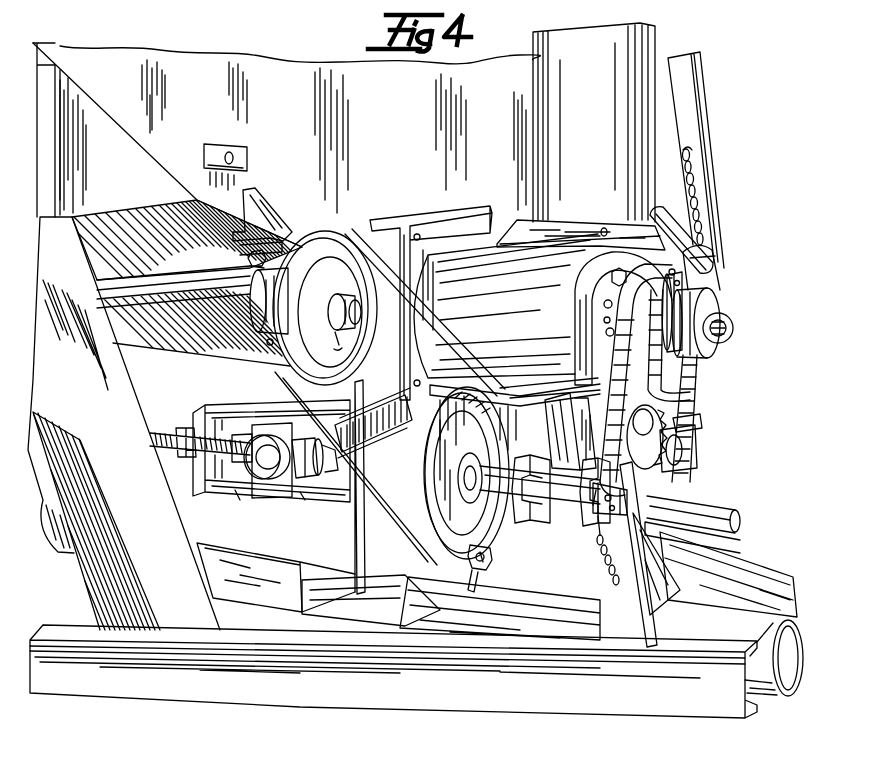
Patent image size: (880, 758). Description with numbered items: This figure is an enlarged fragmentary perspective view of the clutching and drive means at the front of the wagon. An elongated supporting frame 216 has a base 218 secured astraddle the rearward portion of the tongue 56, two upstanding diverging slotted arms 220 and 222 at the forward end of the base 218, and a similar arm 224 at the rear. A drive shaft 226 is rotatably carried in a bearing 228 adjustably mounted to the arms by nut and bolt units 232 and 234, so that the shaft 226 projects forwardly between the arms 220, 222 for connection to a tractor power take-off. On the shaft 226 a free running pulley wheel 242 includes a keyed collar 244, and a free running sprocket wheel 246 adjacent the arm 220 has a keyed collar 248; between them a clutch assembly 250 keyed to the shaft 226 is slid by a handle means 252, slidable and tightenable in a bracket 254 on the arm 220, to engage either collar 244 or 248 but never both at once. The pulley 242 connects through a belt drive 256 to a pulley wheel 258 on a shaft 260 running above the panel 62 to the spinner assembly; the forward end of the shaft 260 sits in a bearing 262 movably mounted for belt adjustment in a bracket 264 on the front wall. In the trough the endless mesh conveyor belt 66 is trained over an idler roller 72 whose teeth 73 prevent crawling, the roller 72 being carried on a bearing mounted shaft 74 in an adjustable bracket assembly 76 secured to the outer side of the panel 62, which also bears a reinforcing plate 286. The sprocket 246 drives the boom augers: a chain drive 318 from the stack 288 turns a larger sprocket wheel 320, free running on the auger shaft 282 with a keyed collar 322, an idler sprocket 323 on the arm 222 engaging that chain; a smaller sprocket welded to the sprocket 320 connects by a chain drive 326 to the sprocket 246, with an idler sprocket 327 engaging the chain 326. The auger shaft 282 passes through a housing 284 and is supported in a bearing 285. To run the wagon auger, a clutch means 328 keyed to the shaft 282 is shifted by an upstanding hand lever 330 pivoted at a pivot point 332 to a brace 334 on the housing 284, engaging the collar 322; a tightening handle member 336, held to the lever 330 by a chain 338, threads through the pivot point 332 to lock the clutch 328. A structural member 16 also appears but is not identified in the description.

The base beam 16 is at (686, 718).
The tongue 56 is at (768, 692).
The horizontal panel 62 is at (328, 590).
The endless conveyor belt 66 is at (370, 405).
The idler roller 72 is at (292, 482).
The teeth 73 is at (326, 480).
The bearing mounted shaft 74 is at (252, 466).
The adjustable bracket assembly 76 is at (192, 408).
The elongated supporting frame 216 is at (705, 572).
The base 218 is at (392, 602).
The upstanding slotted arm 220 is at (664, 604).
The upstanding slotted arm 222 is at (698, 534).
The arm 224 is at (458, 468).
The drive shaft 226 is at (733, 510).
The bearing 228 is at (680, 491).
The nut and bolt unit 232 is at (602, 548).
The nut and bolt unit 234 is at (357, 520).
The pulley wheel 242 is at (490, 375).
The keyed collar 244 is at (480, 448).
The sprocket wheel 246 is at (596, 458).
The keyed collar 248 is at (585, 530).
The clutch assembly 250 is at (530, 525).
The handle means 252 is at (482, 590).
The bracket 254 is at (494, 540).
The belt drive 256 is at (427, 322).
The pulley wheel 258 is at (338, 240).
The shaft 260 is at (147, 308).
The bearing 262 is at (252, 321).
The bracket 264 is at (262, 208).
The auger shaft 282 is at (733, 331).
The housing 284 is at (514, 297).
The bearing 285 is at (604, 302).
The reinforcing plate 286 is at (418, 226).
The stack 288 is at (658, 47).
The chain drive 318 is at (702, 412).
The sprocket wheel 320 is at (700, 378).
The keyed collar 322 is at (648, 286).
The idler sprocket 323 is at (698, 470).
The chain drive 326 is at (606, 331).
The idler sprocket 327 is at (668, 434).
The clutch means 328 is at (720, 306).
The hand lever 330 is at (705, 110).
The pivot point 332 is at (722, 225).
The brace 334 is at (588, 228).
The tightening handle member 336 is at (716, 268).
The chain 338 is at (702, 185).